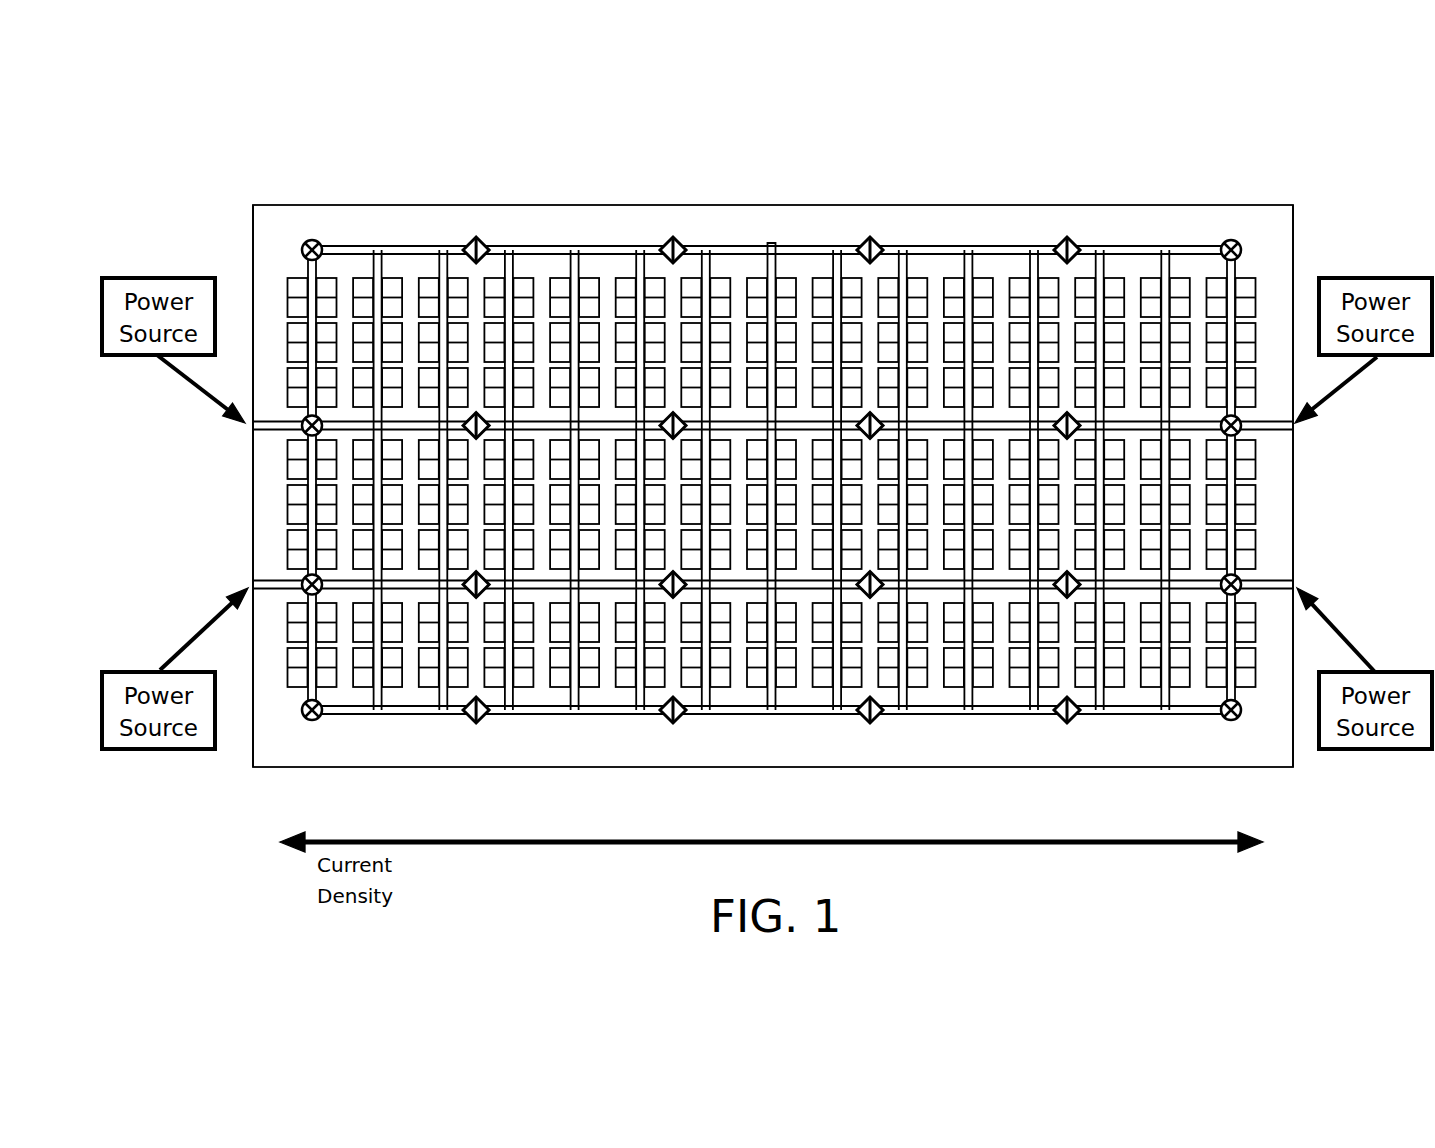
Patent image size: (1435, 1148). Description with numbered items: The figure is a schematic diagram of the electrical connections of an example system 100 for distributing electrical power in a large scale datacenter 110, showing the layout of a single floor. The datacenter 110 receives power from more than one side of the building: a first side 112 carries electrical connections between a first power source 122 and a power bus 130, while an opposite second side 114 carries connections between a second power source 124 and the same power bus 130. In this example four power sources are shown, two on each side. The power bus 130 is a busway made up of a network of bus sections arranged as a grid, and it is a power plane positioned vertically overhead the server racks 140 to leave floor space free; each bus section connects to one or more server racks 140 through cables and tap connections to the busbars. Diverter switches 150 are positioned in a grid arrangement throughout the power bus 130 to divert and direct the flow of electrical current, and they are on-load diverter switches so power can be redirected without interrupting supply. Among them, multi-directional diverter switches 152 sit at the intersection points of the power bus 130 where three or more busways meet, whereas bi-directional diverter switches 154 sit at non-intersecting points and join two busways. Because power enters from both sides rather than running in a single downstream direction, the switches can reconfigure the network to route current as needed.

The system 100 is at (795, 816).
The datacenter 110 is at (778, 428).
The first side 112 is at (231, 512).
The second side 114 is at (1314, 507).
The first power source 122 is at (133, 278).
The second power source 124 is at (1378, 752).
The power bus 130 is at (412, 252).
The server racks 140 is at (757, 277).
The diverter switches 150 is at (1217, 130).
The multi-directional diverter switches 152 is at (1222, 247).
The bi-directional diverter switches 154 is at (1058, 246).